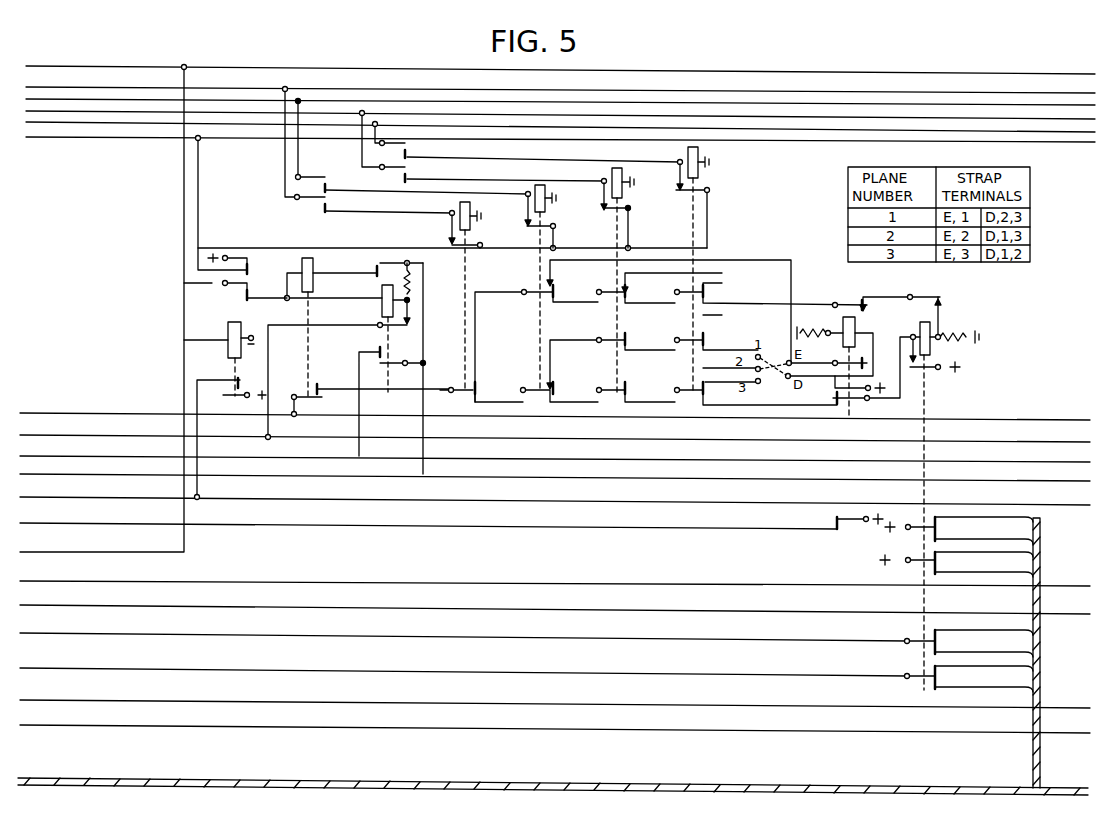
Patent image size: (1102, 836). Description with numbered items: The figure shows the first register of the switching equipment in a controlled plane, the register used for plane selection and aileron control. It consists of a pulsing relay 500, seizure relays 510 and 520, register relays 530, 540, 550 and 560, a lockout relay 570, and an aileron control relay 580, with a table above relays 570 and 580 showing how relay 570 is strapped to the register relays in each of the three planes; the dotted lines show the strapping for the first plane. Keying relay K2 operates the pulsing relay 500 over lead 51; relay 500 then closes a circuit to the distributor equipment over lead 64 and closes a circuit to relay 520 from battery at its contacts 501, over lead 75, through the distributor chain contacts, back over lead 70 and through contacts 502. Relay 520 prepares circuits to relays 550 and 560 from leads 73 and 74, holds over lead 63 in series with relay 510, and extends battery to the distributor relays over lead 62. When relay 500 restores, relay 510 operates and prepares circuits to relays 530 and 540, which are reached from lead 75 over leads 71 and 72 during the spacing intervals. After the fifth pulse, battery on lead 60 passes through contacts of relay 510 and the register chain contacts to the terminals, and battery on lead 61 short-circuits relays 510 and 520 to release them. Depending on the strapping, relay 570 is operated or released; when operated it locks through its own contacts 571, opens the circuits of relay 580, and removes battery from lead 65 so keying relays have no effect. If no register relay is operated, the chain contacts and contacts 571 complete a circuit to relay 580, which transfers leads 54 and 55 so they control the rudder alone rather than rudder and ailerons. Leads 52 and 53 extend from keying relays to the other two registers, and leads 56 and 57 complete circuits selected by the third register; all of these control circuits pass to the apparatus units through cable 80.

The lead 51 is at (52, 540).
The lead 52 is at (56, 568).
The lead 53 is at (56, 593).
The lead 54 is at (56, 621).
The lead 55 is at (54, 656).
The lead 56 is at (54, 688).
The lead 57 is at (54, 713).
The lead 60 is at (58, 400).
The lead 61 is at (54, 422).
The lead 62 is at (58, 443).
The lead 63 is at (58, 462).
The lead 64 is at (58, 485).
The lead 65 is at (58, 511).
The lead 70 is at (58, 52).
The lead 71 is at (50, 74).
The lead 72 is at (90, 99).
The lead 73 is at (55, 112).
The lead 74 is at (96, 124).
The lead 75 is at (120, 140).
The cable 80 is at (56, 766).
The pulsing relay 500 is at (228, 330).
The contacts of relay 500 501 is at (235, 252).
The contacts of relay 500 502 is at (234, 288).
The seizure relay 510 is at (304, 265).
The seizure relay 520 is at (382, 290).
The register relay 530 is at (460, 206).
The register relay 540 is at (552, 288).
The register relay 550 is at (609, 177).
The register relay 560 is at (688, 152).
The lockout relay 570 is at (843, 321).
The contacts of relay 570 571 is at (832, 388).
The aileron control relay 580 is at (920, 322).